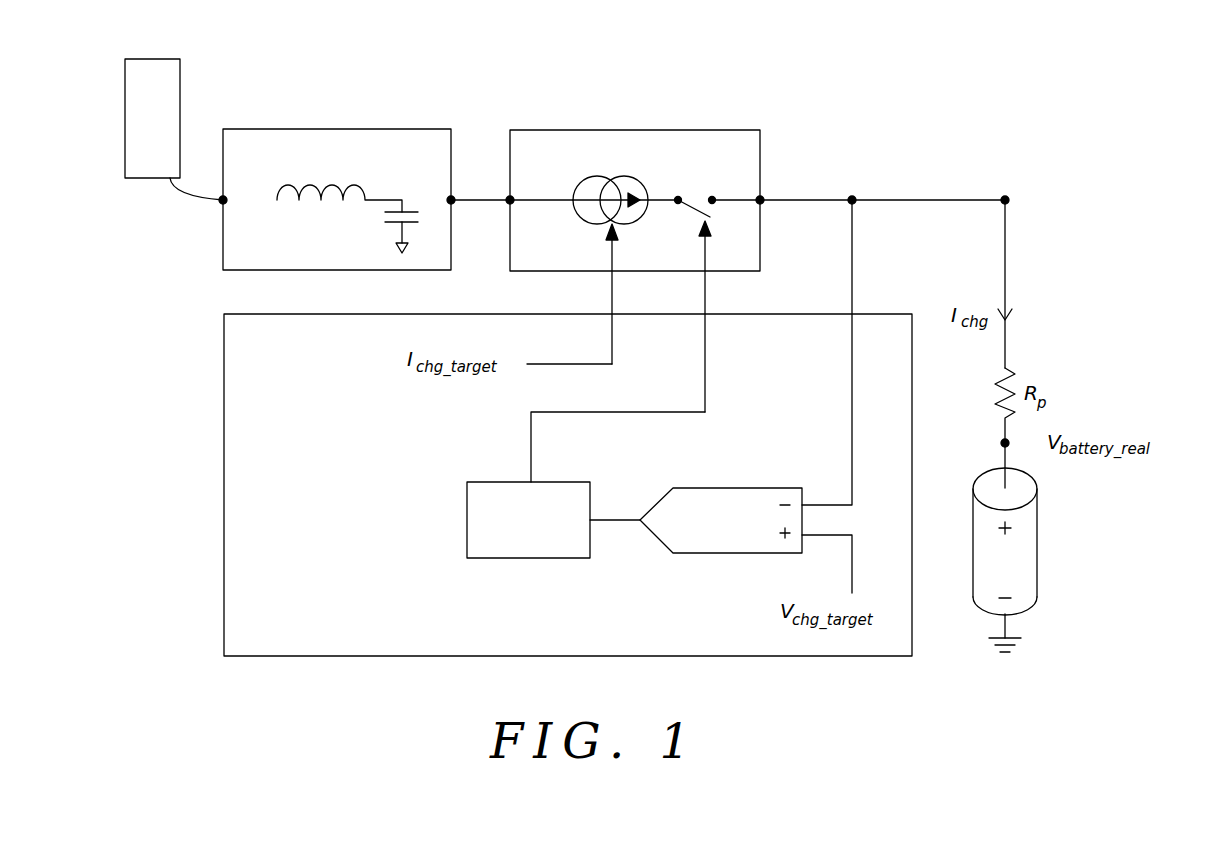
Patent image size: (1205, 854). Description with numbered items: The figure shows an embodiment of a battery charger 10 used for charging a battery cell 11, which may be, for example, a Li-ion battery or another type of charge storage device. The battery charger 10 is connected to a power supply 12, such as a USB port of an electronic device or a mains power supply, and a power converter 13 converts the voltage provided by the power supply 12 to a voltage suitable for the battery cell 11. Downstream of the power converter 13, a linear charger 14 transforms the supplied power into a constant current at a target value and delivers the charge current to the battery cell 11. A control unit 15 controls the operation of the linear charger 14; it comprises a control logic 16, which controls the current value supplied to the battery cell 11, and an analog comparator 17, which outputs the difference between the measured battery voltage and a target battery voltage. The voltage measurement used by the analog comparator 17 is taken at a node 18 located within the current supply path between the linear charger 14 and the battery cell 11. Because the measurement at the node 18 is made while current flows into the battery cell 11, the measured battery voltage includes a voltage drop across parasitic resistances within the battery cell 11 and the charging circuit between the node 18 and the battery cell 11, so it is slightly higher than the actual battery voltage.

The battery charger 10 is at (825, 95).
The battery cell 11 is at (1037, 525).
The power supply 12 is at (181, 79).
The power converter 13 is at (392, 128).
The linear charger 14 is at (685, 129).
The control unit 15 is at (224, 353).
The control logic 16 is at (555, 481).
The analog comparator 17 is at (710, 488).
The node 18 is at (1013, 200).